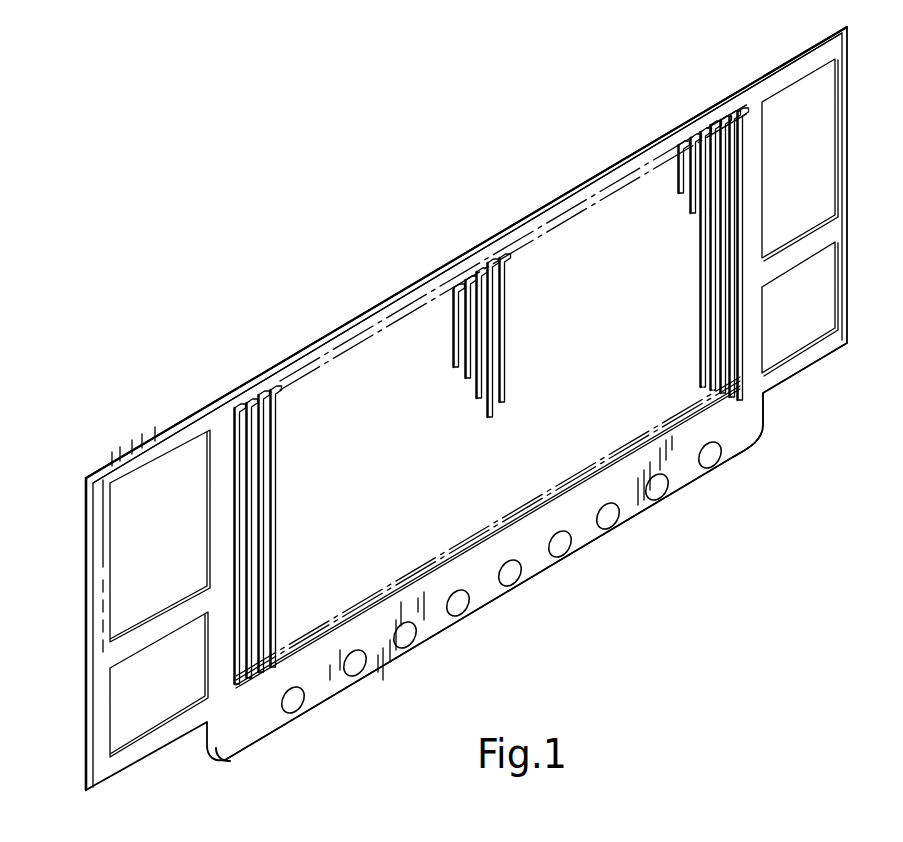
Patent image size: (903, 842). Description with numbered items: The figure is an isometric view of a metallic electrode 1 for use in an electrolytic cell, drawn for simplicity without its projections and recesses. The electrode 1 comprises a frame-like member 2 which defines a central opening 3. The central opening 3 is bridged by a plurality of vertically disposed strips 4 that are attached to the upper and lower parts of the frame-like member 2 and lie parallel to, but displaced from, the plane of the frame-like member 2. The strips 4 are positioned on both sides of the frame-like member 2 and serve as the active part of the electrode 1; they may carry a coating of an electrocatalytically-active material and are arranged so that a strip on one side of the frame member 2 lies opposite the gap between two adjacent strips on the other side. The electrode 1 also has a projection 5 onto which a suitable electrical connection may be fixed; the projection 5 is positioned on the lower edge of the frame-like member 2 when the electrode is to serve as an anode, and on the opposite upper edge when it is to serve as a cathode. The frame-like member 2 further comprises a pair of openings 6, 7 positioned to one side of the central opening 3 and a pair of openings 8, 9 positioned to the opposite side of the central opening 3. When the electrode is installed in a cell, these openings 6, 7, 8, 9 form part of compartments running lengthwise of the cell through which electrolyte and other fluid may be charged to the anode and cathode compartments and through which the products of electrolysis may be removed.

The metallic electrode 1 is at (358, 309).
The frame-like member 2 is at (417, 292).
The central opening 3 is at (532, 260).
The strips 4 is at (686, 162).
The projection 5 is at (750, 442).
The opening 6 is at (113, 686).
The opening 7 is at (160, 468).
The opening 8 is at (823, 318).
The opening 9 is at (827, 158).